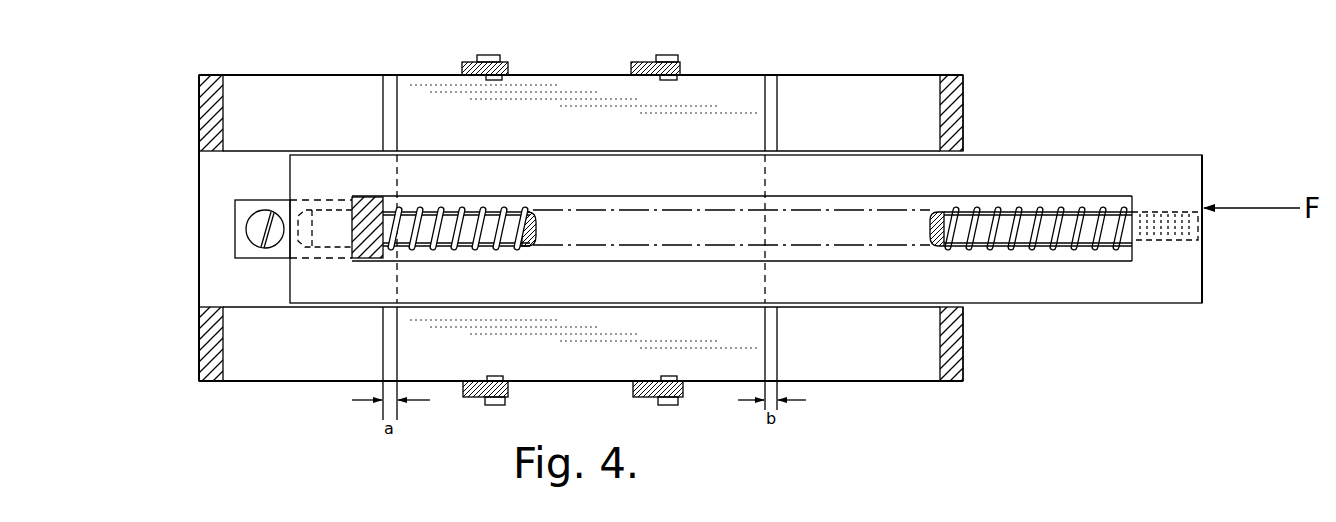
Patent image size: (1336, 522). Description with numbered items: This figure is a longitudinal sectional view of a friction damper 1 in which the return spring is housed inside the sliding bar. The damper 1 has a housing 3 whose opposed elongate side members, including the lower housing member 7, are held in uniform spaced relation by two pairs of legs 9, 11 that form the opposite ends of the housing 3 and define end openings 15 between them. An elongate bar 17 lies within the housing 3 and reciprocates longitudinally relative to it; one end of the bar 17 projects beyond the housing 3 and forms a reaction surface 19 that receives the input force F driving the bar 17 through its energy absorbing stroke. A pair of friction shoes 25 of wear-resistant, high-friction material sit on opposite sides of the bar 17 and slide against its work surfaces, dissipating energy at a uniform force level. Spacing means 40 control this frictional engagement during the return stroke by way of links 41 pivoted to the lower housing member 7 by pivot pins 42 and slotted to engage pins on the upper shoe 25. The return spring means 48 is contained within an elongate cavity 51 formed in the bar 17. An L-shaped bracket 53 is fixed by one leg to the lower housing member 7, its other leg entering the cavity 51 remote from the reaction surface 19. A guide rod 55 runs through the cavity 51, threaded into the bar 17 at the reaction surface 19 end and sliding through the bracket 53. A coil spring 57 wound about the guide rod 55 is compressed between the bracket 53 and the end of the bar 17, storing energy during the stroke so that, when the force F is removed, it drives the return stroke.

The damper 1 is at (984, 72).
The housing 3 is at (717, 72).
The lower housing member 7 is at (278, 368).
The legs 9 is at (199, 343).
The legs 11 is at (963, 362).
The end openings 15 is at (213, 262).
The bar 17 is at (962, 291).
The reaction surface 19 is at (1203, 262).
The friction shoes 25 is at (579, 141).
The spacing means 40 is at (590, 410).
The links 41 is at (683, 390).
The pivot pins 42 is at (674, 405).
The return spring means 48 is at (1089, 205).
The cavity 51 is at (598, 202).
The L-shaped bracket 53 is at (371, 174).
The guide rod 55 is at (462, 206).
The coil spring 57 is at (1050, 258).